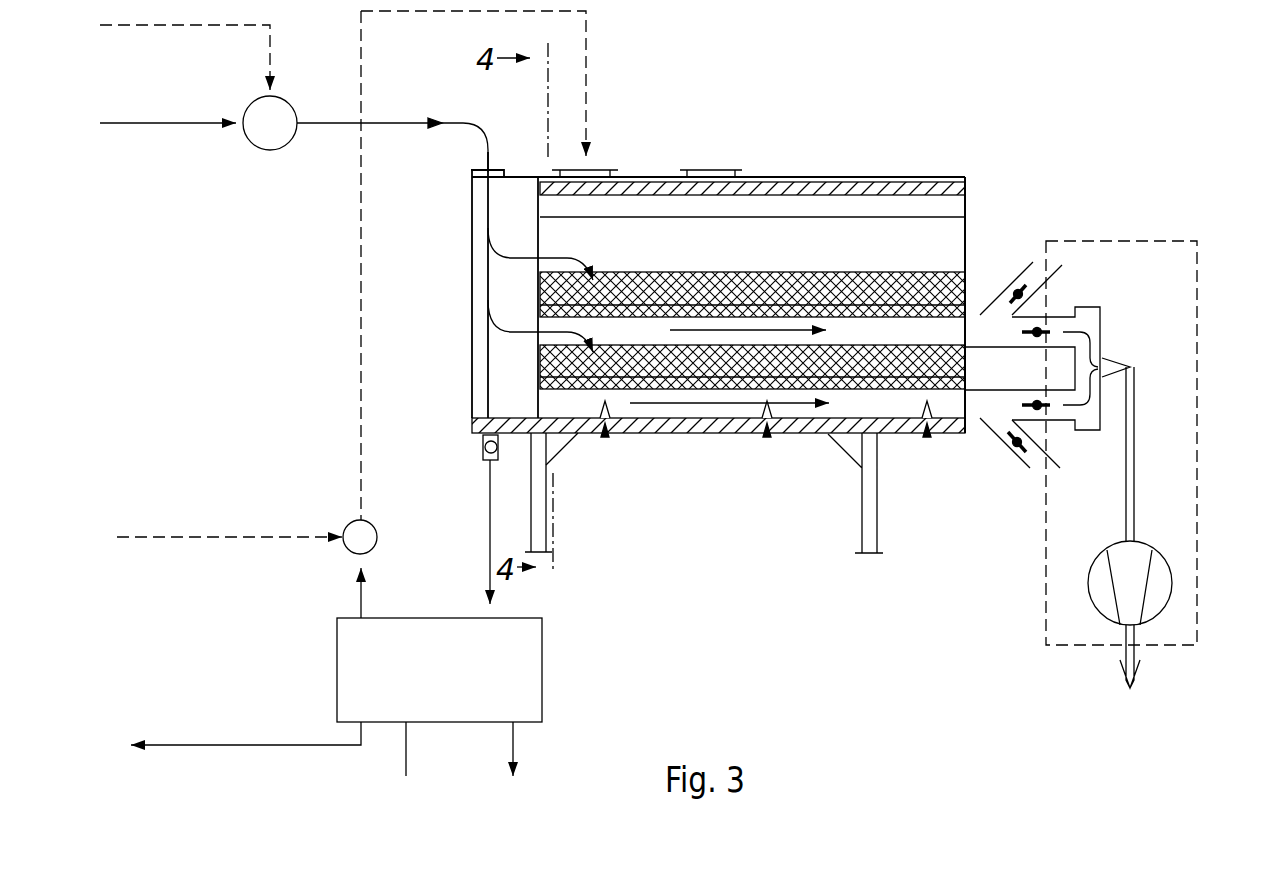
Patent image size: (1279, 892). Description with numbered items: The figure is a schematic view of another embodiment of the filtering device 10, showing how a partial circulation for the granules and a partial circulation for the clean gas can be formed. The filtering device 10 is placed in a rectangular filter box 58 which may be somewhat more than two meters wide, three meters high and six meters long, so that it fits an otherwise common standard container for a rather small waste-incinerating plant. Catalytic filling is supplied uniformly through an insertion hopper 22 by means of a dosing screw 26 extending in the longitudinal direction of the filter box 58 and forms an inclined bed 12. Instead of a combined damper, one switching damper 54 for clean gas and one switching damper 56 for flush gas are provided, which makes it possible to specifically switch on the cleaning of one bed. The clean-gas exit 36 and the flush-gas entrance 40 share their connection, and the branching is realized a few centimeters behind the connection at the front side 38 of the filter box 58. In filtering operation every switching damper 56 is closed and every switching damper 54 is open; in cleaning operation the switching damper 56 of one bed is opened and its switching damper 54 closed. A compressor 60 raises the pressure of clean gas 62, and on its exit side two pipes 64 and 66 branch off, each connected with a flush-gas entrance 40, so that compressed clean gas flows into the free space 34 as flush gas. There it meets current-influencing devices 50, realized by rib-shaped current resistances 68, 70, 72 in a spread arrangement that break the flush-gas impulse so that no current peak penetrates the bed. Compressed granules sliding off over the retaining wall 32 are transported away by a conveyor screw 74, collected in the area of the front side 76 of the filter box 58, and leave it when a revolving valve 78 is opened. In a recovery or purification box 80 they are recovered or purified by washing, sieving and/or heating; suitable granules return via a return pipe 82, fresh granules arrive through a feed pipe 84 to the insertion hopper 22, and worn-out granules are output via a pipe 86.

The filtering device 10 is at (982, 149).
The inclined bed 12 is at (952, 290).
The insertion hopper 22 is at (647, 207).
The dosing screw 26 is at (850, 188).
The retaining wall 32 is at (547, 310).
The free space 34 is at (638, 333).
The clean-gas exit 36 is at (953, 410).
The front side 38 is at (974, 232).
The flush-gas entrance 40 is at (1050, 283).
The current-influencing device 50 is at (581, 460).
The switching damper for clean gas 54 is at (1022, 404).
The switching damper for flush gas 56 is at (1027, 457).
The filter box 58 is at (798, 177).
The compressor 60 is at (1133, 578).
The clean gas 62 is at (1135, 502).
The pipe 64 is at (1046, 590).
The pipe 66 is at (1197, 310).
The current resistance 68 is at (606, 437).
The current resistance 70 is at (768, 437).
The current resistance 72 is at (928, 437).
The conveyor screw 74 is at (515, 423).
The front side 76 is at (472, 253).
The revolving valve 78 is at (483, 445).
The recovery or purification box 80 is at (542, 672).
The return pipe 82 is at (361, 590).
The feed pipe 84 is at (219, 523).
The pipe 86 is at (222, 745).